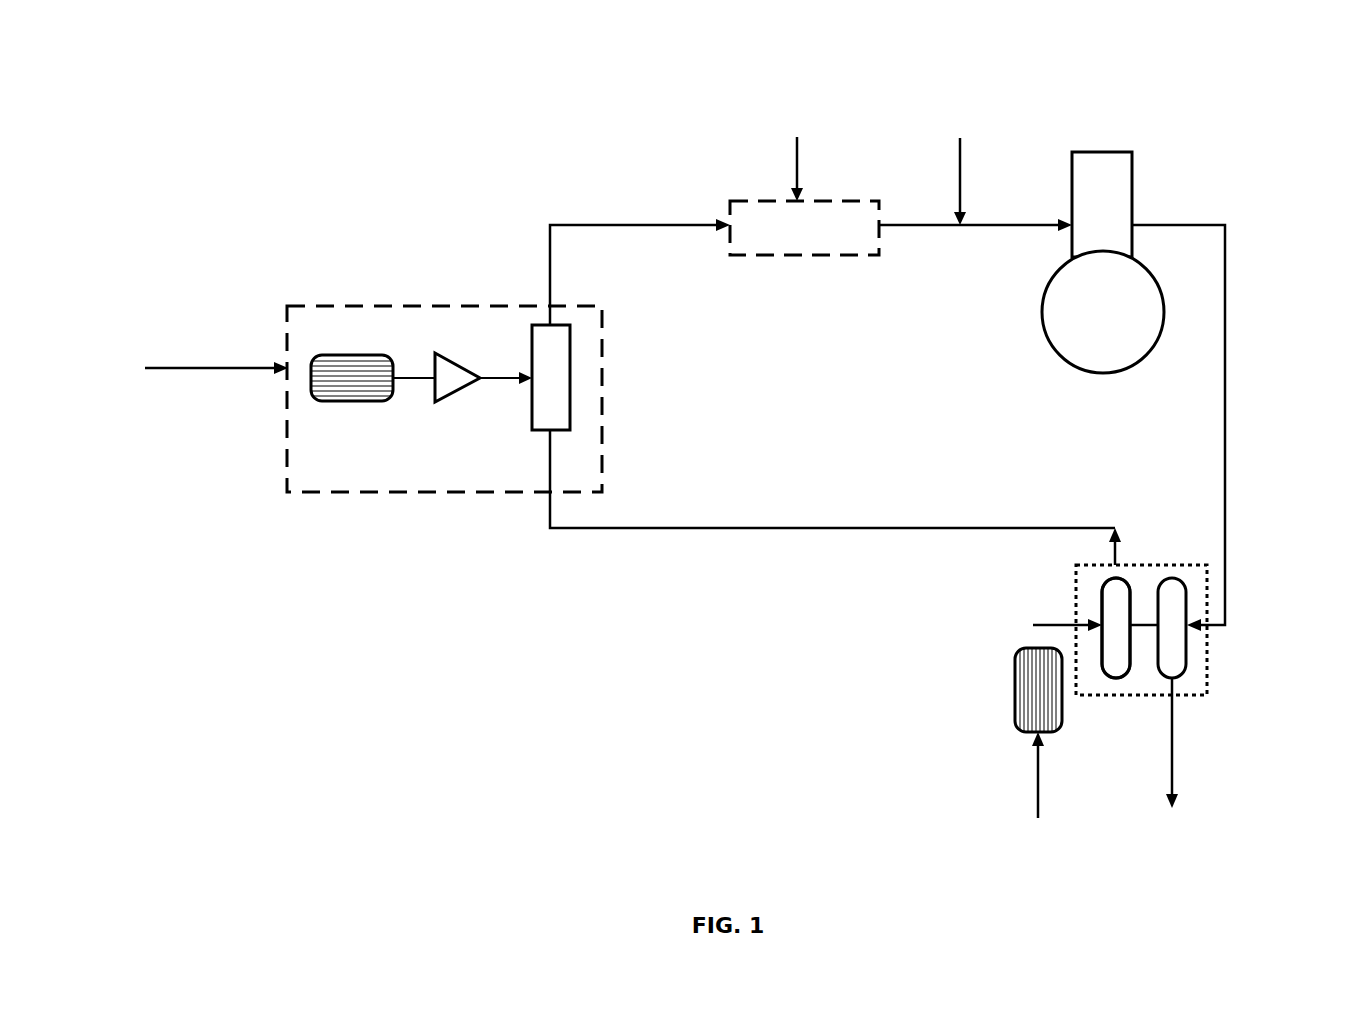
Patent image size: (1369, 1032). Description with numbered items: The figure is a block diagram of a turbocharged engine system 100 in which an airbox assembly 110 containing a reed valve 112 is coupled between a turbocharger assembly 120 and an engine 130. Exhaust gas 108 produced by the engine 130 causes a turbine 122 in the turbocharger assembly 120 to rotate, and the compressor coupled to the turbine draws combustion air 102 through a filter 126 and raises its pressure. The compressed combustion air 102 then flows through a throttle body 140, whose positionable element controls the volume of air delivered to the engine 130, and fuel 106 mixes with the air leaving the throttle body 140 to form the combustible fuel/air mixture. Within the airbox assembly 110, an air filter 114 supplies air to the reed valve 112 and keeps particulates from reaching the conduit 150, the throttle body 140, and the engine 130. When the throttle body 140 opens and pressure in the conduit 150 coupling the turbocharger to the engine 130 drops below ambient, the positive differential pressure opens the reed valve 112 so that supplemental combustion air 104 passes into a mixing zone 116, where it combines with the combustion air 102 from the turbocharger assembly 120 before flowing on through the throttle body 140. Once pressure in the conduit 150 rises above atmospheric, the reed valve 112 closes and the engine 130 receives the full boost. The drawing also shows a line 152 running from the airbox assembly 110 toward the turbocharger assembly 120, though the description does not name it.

The turbocharged engine system 100 is at (1270, 44).
The combustion air 102 is at (612, 220).
The supplemental combustion air 104 is at (208, 426).
The fuel 106 is at (971, 165).
The exhaust gas 108 is at (1173, 772).
The airbox assembly 110 is at (442, 296).
The reed valve 112 is at (464, 369).
The air filter 114 is at (349, 355).
The mixing zone 116 is at (528, 433).
The turbocharger assembly 120 is at (1218, 690).
The turbine 122 is at (1186, 648).
The filter 126 is at (1015, 694).
The engine 130 is at (1085, 325).
The throttle body 140 is at (797, 255).
The conduit 150 is at (1117, 680).
The supplemental air line 152 is at (668, 228).